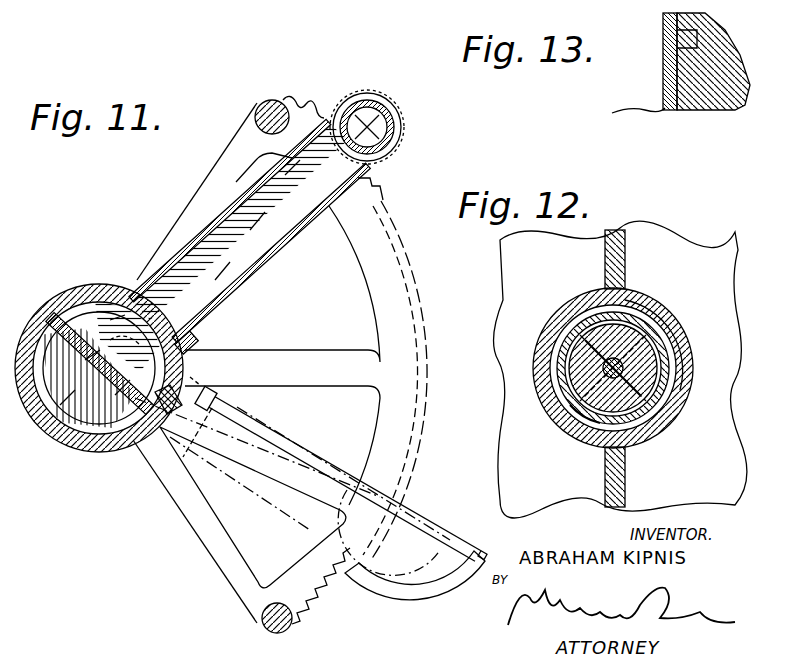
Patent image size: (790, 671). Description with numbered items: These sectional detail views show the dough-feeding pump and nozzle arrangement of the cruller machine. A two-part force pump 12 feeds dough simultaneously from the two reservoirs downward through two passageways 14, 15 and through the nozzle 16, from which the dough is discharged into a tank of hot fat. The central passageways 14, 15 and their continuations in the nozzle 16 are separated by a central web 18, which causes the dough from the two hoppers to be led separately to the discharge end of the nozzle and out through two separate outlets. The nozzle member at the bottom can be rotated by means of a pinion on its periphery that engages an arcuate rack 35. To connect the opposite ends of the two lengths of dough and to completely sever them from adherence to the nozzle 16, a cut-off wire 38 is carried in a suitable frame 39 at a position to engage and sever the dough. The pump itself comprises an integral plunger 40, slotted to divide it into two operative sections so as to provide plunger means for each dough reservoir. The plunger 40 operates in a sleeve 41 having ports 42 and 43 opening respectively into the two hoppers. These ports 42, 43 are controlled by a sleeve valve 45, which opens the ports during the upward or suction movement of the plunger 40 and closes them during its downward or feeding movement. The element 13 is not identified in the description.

In FIG. 12, the force pump 12 is at (616, 338).
In FIG. 12, the bracket plate 13 is at (620, 266).
In FIG. 11, the passageway 14 is at (68, 430).
In FIG. 11, the passageway 15 is at (200, 353).
In FIG. 11, the nozzle 16 is at (268, 268).
In FIG. 11, the central web 18 is at (92, 455).
In FIG. 12, the central web 18 is at (580, 430).
In FIG. 11, the arcuate rack 35 is at (372, 184).
In FIG. 11, the cut-off wire 38 is at (455, 540).
In FIG. 11, the frame 39 is at (430, 600).
In FIG. 12, the plunger 40 is at (648, 372).
In FIG. 12, the sleeve 41 is at (650, 313).
In FIG. 13, the sleeve 41 is at (663, 78).
In FIG. 12, the port 42 is at (562, 406).
In FIG. 12, the port 43 is at (676, 333).
In FIG. 12, the sleeve valve 45 is at (557, 322).
In FIG. 13, the sleeve valve 45 is at (700, 20).